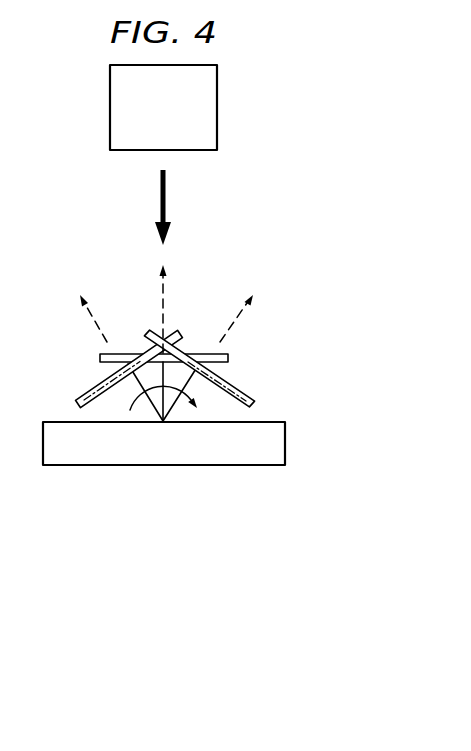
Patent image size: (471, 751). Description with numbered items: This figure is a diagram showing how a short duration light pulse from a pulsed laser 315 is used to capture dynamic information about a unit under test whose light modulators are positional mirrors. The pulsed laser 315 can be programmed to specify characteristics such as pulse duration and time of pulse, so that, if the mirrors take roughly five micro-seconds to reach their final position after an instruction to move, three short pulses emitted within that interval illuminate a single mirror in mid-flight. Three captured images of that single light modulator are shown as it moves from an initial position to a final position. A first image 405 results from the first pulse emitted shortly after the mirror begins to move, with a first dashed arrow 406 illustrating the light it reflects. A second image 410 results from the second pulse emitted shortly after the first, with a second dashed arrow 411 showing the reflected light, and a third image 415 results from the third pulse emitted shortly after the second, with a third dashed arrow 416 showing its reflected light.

The pulsed laser 315 is at (110, 107).
The first image 405 is at (82, 398).
The first dashed arrow 406 is at (75, 300).
The second image 410 is at (126, 353).
The second dashed arrow 411 is at (166, 269).
The third image 415 is at (226, 383).
The third dashed arrow 416 is at (256, 297).